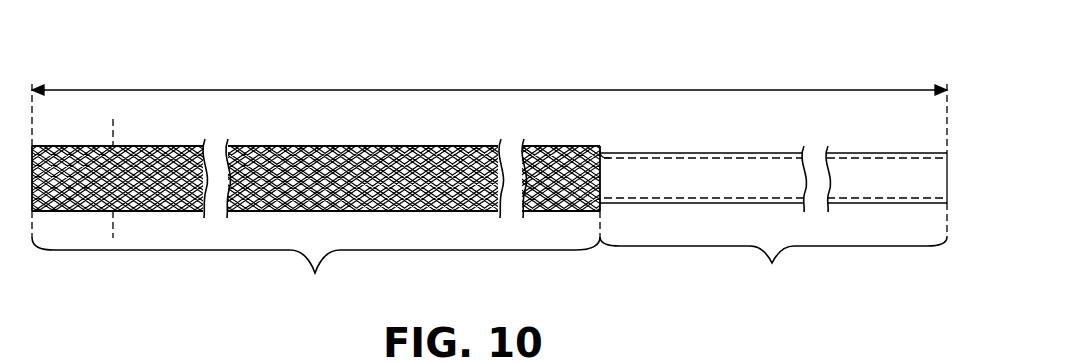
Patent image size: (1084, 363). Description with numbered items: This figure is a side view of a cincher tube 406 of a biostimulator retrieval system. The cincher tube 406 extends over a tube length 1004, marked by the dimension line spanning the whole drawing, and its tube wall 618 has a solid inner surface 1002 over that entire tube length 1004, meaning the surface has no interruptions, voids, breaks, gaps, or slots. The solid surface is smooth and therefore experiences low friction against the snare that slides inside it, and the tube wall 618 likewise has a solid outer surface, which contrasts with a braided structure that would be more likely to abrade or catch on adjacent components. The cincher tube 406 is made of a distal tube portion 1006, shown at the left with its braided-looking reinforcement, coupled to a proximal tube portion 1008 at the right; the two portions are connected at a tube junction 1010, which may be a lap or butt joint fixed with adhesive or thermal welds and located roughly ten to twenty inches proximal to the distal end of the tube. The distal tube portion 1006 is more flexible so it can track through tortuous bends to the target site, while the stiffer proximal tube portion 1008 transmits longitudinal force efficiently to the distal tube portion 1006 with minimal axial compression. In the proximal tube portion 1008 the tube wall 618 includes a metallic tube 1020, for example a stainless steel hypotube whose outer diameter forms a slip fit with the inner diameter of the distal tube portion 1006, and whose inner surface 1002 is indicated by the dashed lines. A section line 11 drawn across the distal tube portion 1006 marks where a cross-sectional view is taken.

The cincher tube 406 is at (877, 36).
The tube length 1004 is at (522, 90).
The tube wall 618 is at (164, 147).
The inner surface 1002 is at (313, 152).
The tube junction 1010 is at (600, 152).
The metallic tube 1020 is at (701, 153).
The distal tube portion 1006 is at (316, 269).
The proximal tube portion 1008 is at (773, 264).
The section line 11- 11 is at (75, 238).